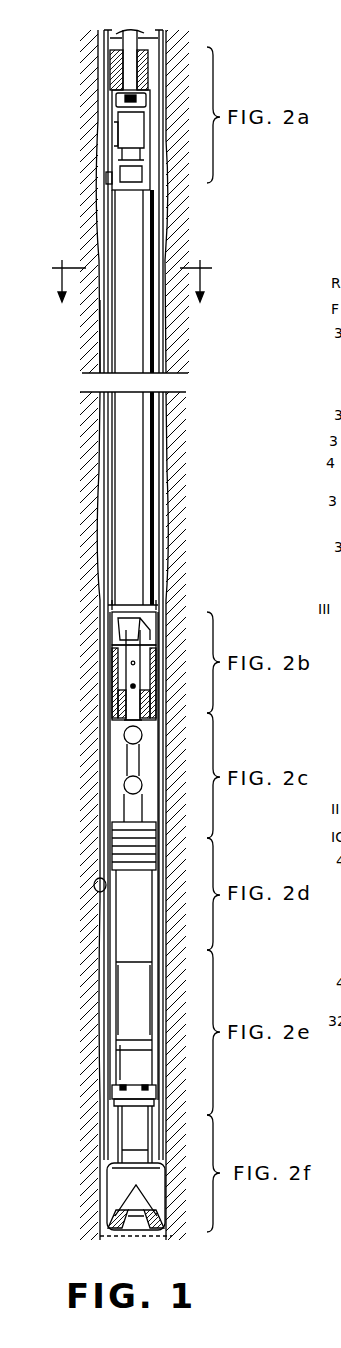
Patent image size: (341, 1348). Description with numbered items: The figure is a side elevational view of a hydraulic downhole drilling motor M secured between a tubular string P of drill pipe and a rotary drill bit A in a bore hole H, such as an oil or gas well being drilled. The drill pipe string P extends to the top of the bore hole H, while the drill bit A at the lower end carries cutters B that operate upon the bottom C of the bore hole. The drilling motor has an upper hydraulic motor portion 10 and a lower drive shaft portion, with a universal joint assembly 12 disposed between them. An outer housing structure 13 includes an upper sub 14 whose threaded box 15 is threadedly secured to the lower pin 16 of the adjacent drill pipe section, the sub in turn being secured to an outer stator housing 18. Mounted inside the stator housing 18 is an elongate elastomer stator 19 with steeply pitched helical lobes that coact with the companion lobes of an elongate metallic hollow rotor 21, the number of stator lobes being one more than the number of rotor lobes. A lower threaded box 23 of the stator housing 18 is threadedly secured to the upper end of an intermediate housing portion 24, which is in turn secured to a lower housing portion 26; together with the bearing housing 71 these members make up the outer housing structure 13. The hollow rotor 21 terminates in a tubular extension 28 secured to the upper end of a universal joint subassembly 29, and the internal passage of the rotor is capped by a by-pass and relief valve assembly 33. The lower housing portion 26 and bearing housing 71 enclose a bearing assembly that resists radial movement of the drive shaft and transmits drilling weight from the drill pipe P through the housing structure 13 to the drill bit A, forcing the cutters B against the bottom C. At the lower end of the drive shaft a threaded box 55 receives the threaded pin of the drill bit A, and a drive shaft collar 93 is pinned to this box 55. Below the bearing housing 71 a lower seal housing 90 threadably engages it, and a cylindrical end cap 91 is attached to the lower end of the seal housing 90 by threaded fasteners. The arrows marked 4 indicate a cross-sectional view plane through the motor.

The tubular string P is at (141, 30).
The hydraulic downhole drilling motor M is at (76, 432).
The bore hole H is at (94, 885).
The rotary drill bit A is at (99, 1178).
The cutters B is at (105, 1218).
The bottom of the bore hole C is at (118, 1238).
The section line 4- 4 is at (130, 280).
The upper hydraulic motor portion 10 is at (108, 246).
The universal joint assembly 12 is at (116, 748).
The outer housing structure 13 is at (105, 358).
The upper sub 14 is at (102, 103).
The threaded box 15 is at (110, 76).
The lower pin 16 is at (108, 38).
The outer stator housing 18 is at (108, 330).
The stator 19 is at (104, 180).
The hollow rotor 21 is at (108, 630).
The lower threaded box 23 is at (112, 662).
The intermediate housing portion 24 is at (110, 706).
The lower housing portion 26 is at (118, 929).
The tubular extension 28 is at (110, 672).
The universal joint subassembly 29 is at (128, 765).
The by-pass and relief valve assembly 33 is at (104, 130).
The threaded box 55 is at (118, 1141).
The bearing housing 71 is at (118, 1000).
The lower seal housing 90 is at (120, 1055).
The cylindrical end cap 91 is at (115, 1088).
The drive shaft collar 93 is at (115, 1103).